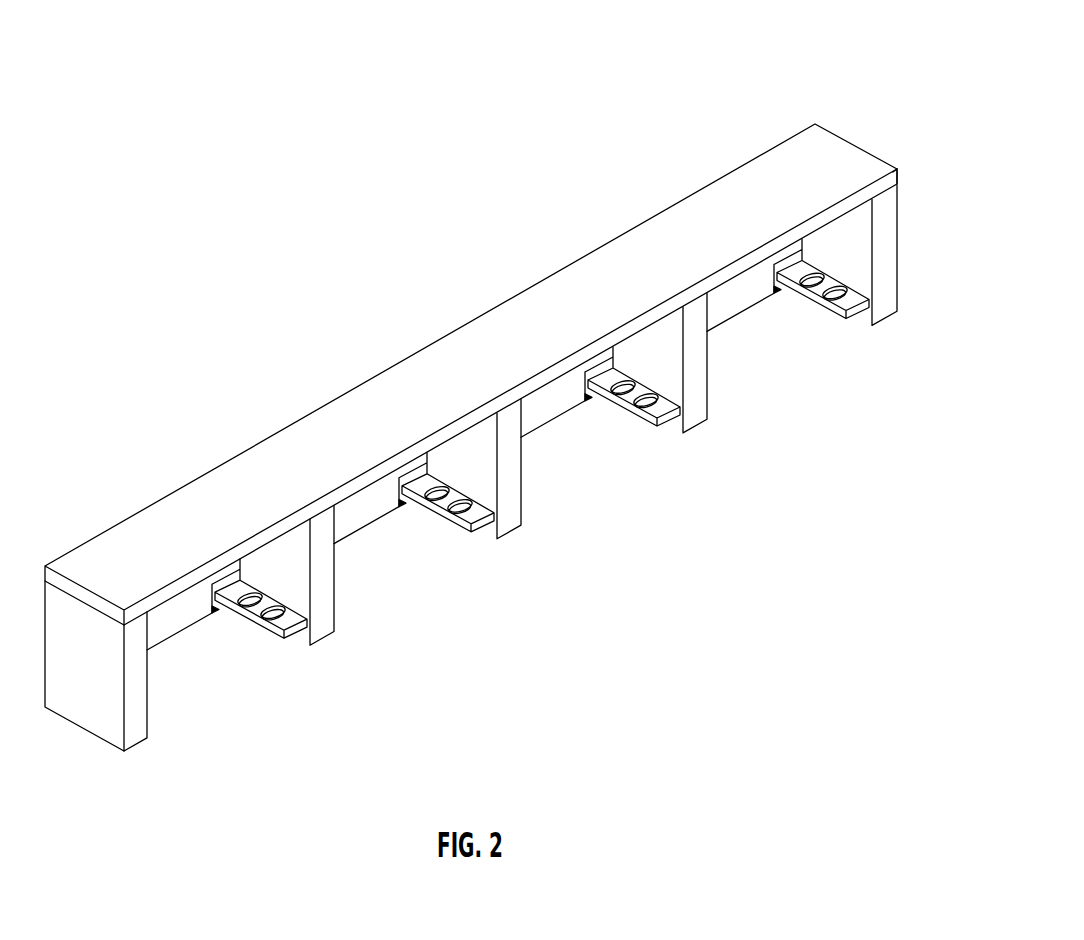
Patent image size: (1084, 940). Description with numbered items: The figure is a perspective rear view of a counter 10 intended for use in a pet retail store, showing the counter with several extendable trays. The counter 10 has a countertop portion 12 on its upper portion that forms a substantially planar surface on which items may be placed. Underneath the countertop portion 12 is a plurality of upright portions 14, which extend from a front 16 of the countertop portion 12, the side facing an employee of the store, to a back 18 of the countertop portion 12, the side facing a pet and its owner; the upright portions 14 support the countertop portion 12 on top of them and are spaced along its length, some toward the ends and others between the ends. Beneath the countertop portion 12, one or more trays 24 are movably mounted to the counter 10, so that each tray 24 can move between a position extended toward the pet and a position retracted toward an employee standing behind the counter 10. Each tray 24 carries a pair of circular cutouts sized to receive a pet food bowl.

The counter 10 is at (335, 283).
The countertop portion 12 is at (787, 168).
The upright portions 14 is at (882, 300).
The front 16 is at (663, 207).
The back 18 is at (898, 177).
The trays 24 is at (848, 322).